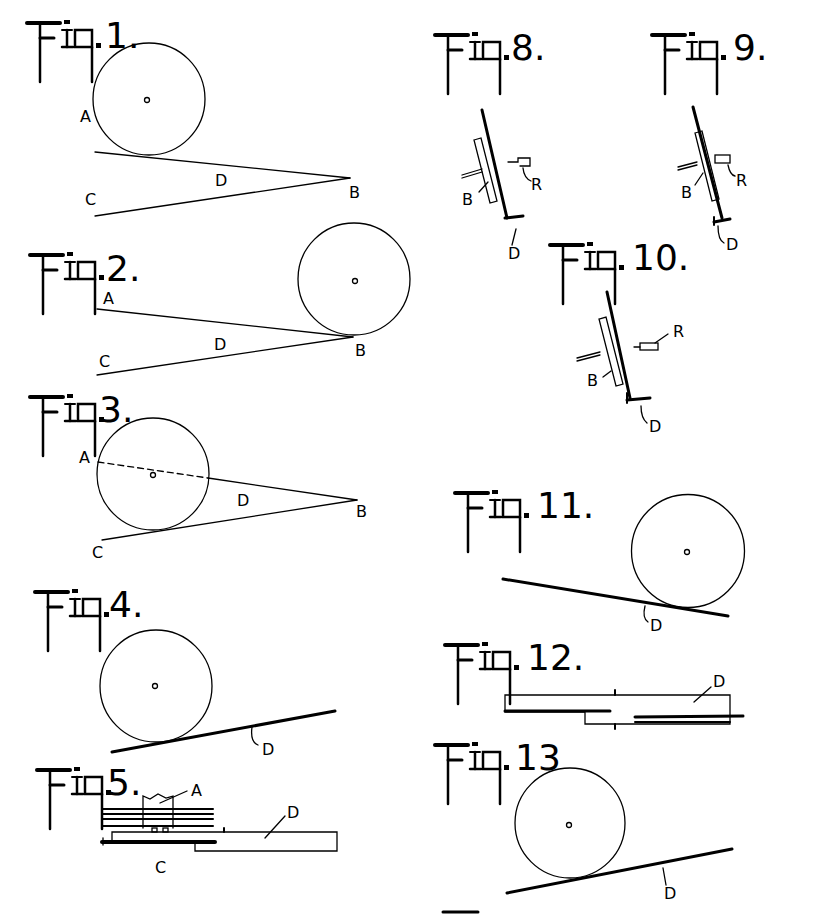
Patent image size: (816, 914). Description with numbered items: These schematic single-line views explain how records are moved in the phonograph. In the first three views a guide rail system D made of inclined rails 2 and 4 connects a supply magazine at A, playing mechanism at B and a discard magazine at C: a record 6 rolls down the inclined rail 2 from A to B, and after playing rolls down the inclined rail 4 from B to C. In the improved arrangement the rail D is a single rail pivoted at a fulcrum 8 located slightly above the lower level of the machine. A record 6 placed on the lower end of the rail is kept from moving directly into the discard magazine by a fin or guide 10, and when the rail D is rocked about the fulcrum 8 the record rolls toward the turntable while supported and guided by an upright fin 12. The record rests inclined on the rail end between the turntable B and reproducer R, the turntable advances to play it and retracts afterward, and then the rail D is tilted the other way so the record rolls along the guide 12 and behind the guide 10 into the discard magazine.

In FIG. 1, the inclined rail 2 is at (213, 160).
In FIG. 2, the inclined rail 2 is at (225, 315).
In FIG. 3, the inclined rail 2 is at (255, 484).
In FIG. 1, the inclined rail 4 is at (226, 200).
In FIG. 2, the inclined rail 4 is at (222, 358).
In FIG. 3, the inclined rail 4 is at (253, 520).
In FIG. 1, the record 6 is at (190, 84).
In FIG. 2, the record 6 is at (376, 246).
In FIG. 3, the record 6 is at (187, 449).
In FIG. 4, the record 6 is at (202, 676).
In FIG. 5, the record 6 is at (102, 844).
In FIG. 8, the record 6 is at (490, 125).
In FIG. 9, the record 6 is at (699, 118).
In FIG. 10, the record 6 is at (616, 314).
In FIG. 11, the record 6 is at (728, 532).
In FIG. 12, the record 6 is at (743, 716).
In FIG. 13, the record 6 is at (615, 812).
In FIG. 4, the fulcrum 8 is at (222, 730).
In FIG. 5, the fulcrum 8 is at (226, 830).
In FIG. 11, the fulcrum 8 is at (616, 597).
In FIG. 12, the fulcrum 8 is at (612, 694).
In FIG. 13, the fulcrum 8 is at (620, 868).
In FIG. 5, the fin or guide 10 is at (138, 848).
In FIG. 12, the fin or guide 10 is at (558, 713).
In FIG. 5, the upright fin 12 is at (287, 855).
In FIG. 8, the upright fin 12 is at (502, 210).
In FIG. 9, the upright fin 12 is at (707, 220).
In FIG. 10, the upright fin 12 is at (627, 396).
In FIG. 12, the upright fin 12 is at (682, 724).